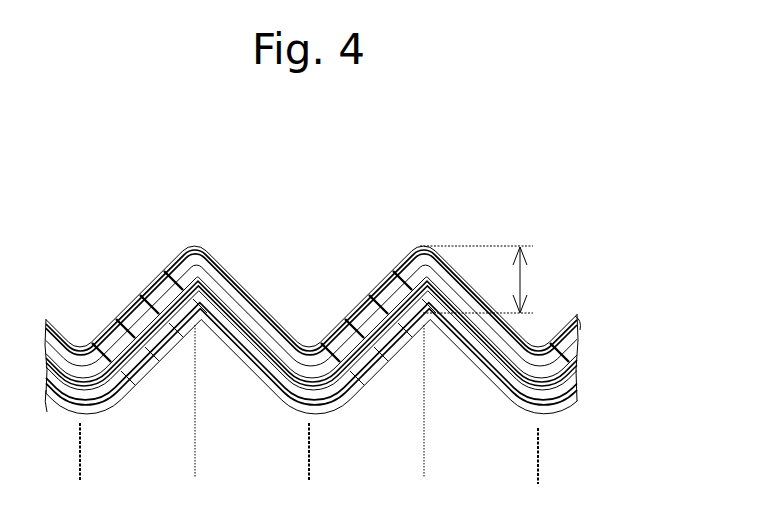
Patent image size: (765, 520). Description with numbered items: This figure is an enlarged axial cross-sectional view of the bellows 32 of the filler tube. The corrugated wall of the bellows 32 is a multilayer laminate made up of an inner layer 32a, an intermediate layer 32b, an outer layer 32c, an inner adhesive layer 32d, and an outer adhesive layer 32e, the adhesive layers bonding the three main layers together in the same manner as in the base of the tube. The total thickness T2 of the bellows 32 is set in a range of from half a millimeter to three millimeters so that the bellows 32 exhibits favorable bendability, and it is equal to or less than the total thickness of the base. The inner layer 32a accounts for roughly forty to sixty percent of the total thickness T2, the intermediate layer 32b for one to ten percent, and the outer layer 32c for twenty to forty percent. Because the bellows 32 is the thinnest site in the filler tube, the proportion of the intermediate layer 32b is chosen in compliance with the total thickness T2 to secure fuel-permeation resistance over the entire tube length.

The bellows 32 is at (345, 318).
The inner layer 32a is at (287, 382).
The intermediate layer 32b is at (214, 253).
The outer layer 32c is at (125, 336).
The inner adhesive layer 32d is at (240, 325).
The outer adhesive layer 32e is at (163, 293).
The total thickness T2 is at (493, 279).